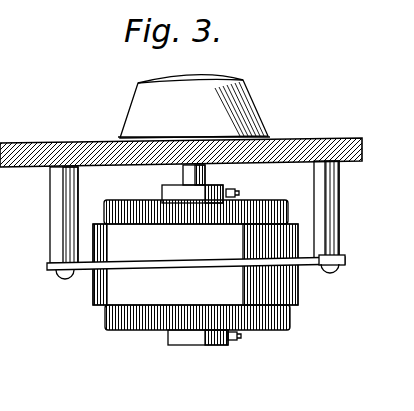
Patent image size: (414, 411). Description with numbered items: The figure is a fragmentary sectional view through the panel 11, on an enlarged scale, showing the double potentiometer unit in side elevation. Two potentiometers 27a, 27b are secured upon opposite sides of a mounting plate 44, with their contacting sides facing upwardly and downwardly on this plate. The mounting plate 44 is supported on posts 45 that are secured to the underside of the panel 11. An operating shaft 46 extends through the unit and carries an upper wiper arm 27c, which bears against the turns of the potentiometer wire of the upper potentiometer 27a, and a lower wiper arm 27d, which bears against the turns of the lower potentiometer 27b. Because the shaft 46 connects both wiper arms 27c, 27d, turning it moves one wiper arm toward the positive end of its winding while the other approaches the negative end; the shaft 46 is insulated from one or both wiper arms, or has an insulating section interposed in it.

The panel 11 is at (352, 138).
The potentiometer 27a is at (106, 213).
The potentiometer 27b is at (107, 320).
The upper wiper arm 27c is at (261, 199).
The lower wiper arm 27d is at (272, 328).
The mounting plate 44 is at (345, 264).
The posts 45 is at (58, 249).
The operating shaft 46 is at (182, 176).